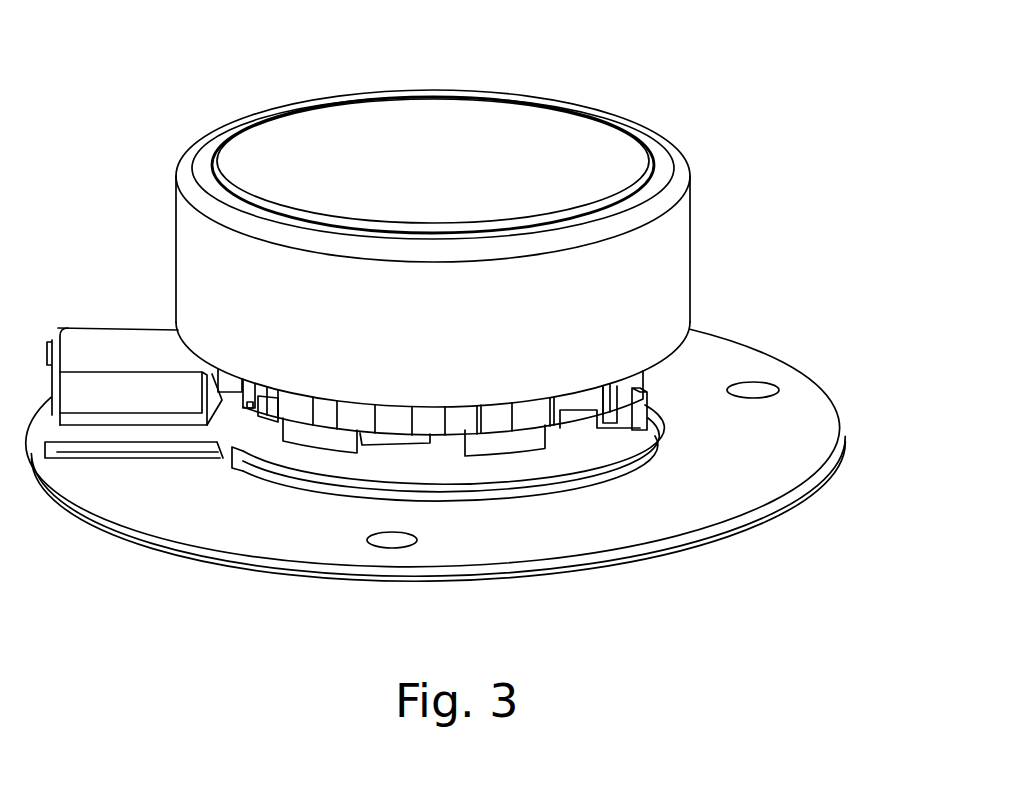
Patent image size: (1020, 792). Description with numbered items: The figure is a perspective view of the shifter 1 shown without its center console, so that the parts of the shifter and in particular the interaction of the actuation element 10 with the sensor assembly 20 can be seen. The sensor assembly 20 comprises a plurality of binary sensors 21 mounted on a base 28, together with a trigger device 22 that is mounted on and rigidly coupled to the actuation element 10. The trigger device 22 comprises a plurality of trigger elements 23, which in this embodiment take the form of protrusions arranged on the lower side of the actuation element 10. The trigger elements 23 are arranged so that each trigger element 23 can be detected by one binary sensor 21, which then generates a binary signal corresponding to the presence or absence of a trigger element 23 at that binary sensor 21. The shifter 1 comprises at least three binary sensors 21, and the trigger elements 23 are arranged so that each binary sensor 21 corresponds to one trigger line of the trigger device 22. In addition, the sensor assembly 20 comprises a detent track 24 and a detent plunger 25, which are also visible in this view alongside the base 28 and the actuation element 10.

The shifter 1 is at (250, 84).
The actuation element 10 is at (658, 150).
The sensor assembly 20 is at (655, 374).
The binary sensors 21 is at (598, 439).
The trigger device 22 is at (262, 435).
The trigger elements 23 is at (333, 455).
The detent track 24 is at (252, 410).
The detent plunger 25 is at (172, 330).
The base 28 is at (805, 428).